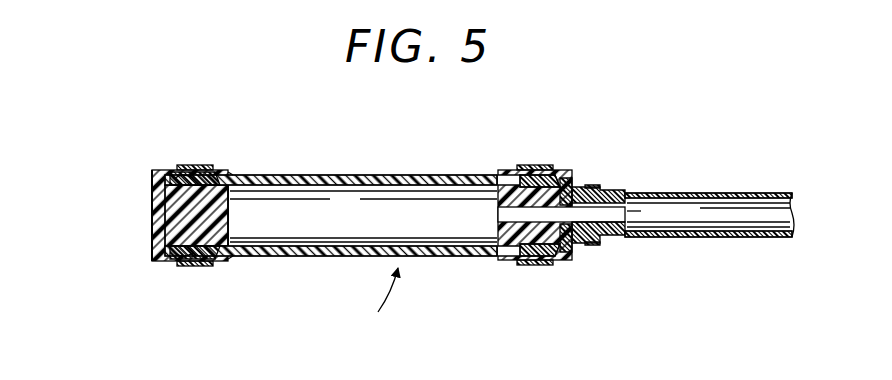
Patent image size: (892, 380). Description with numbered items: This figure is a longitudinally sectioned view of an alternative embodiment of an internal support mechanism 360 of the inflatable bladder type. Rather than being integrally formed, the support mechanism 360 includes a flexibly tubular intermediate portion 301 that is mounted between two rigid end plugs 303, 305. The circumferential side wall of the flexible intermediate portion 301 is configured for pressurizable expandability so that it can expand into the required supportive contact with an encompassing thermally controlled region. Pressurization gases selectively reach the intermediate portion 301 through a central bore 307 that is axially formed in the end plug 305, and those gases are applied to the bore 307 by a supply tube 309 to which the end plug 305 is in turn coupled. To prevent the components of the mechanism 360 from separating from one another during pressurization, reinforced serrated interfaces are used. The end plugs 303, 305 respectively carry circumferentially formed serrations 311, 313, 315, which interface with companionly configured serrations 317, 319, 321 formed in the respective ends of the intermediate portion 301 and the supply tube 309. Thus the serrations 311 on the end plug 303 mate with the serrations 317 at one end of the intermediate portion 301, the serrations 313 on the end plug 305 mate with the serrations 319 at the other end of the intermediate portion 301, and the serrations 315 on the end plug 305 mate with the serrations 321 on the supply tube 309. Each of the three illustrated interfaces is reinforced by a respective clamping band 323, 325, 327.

The flexibly tubular intermediate portion 301 is at (318, 230).
The rigid end plug 303 is at (153, 235).
The rigid end plug 305 is at (563, 232).
The central bore 307 is at (499, 214).
The supply tube 309 is at (717, 222).
The serrations 311 is at (157, 192).
The serrations 313 is at (577, 185).
The serrations 315 is at (656, 210).
The serrations 317 is at (200, 183).
The serrations 319 is at (545, 185).
The serrations 321 is at (607, 195).
The clamping band 323 is at (197, 266).
The clamping band 325 is at (538, 265).
The clamping band 327 is at (603, 183).
The support mechanism 360 is at (369, 303).